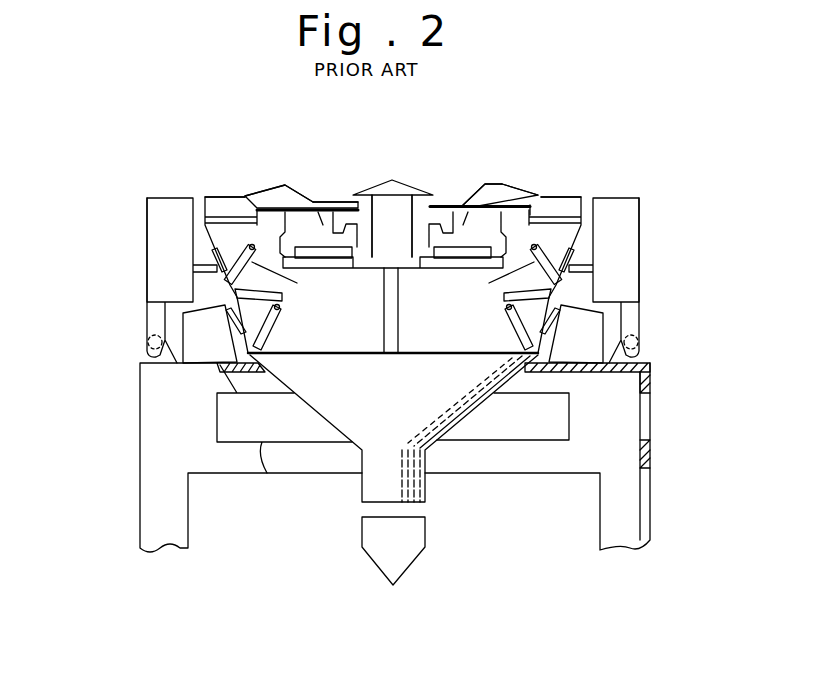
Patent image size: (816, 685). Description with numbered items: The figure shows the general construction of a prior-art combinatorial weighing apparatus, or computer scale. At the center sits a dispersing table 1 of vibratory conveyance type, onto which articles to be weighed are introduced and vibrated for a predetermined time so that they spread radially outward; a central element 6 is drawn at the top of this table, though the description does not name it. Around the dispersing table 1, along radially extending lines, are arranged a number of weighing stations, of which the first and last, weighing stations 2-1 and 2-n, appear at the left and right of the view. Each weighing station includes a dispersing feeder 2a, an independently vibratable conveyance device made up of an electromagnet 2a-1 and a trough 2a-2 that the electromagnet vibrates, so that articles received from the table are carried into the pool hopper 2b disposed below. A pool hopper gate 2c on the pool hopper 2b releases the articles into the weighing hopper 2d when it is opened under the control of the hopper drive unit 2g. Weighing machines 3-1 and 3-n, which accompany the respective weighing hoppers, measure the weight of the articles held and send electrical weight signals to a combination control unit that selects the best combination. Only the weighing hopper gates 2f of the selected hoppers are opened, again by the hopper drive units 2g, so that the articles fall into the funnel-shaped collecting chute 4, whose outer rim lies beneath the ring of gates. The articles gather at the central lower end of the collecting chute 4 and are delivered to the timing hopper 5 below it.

The dispersing table 1 is at (405, 200).
The weighing station 2-1 is at (207, 178).
The weighing station 2-n is at (617, 168).
The dispersing feeder 2a is at (266, 188).
The electromagnet 2a-1 is at (332, 202).
The trough 2a-2 is at (298, 191).
The pool hopper 2b is at (213, 230).
The pool hopper gate 2c is at (250, 262).
The weighing hopper 2d is at (280, 303).
The weighing hopper gate 2f is at (273, 330).
The hopper drive unit 2g is at (153, 249).
The weighing machine 3-1 is at (193, 332).
The weighing machine 3-n is at (593, 325).
The collecting chute 4 is at (355, 427).
The timing hopper 5 is at (420, 537).
The distribution table 6 is at (430, 200).